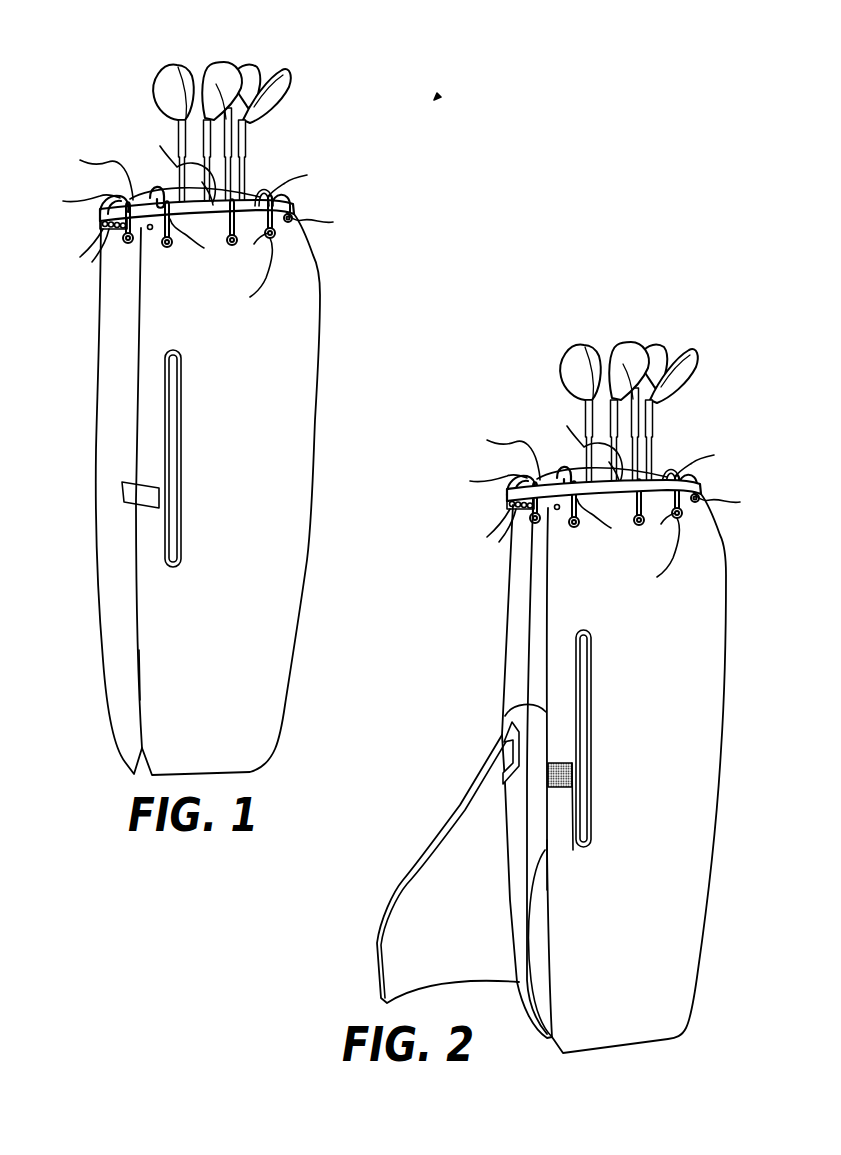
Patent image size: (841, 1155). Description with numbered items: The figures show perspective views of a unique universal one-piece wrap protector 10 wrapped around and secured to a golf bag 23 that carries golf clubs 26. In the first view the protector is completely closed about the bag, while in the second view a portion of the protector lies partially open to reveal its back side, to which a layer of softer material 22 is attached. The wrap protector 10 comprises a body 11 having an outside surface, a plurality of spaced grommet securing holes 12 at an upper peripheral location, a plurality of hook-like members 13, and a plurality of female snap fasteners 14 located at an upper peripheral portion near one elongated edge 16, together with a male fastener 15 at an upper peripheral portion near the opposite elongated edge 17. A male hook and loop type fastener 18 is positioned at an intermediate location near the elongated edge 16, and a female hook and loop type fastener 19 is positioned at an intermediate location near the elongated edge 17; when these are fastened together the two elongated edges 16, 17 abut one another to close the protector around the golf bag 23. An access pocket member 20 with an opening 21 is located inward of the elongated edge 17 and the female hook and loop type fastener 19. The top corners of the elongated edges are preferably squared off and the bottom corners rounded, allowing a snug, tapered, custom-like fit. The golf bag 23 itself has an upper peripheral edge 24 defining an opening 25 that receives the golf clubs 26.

In FIG. 1, the one-piece wrap protector 10 is at (439, 96).
In FIG. 1, the body 11 is at (297, 379).
In FIG. 2, the body 11 is at (706, 660).
In FIG. 1, the grommet securing holes 12 is at (100, 226).
In FIG. 2, the grommet securing holes 12 is at (572, 533).
In FIG. 1, the hook-like members 13 is at (198, 212).
In FIG. 2, the hook-like members 13 is at (605, 492).
In FIG. 1, the female snap fasteners 14 is at (105, 227).
In FIG. 2, the female snap fasteners 14 is at (507, 551).
In FIG. 1, the male fastener 15 is at (150, 230).
In FIG. 2, the male fastener 15 is at (564, 542).
In FIG. 1, the elongated edge 16 is at (137, 592).
In FIG. 2, the elongated edge 16 is at (502, 712).
In FIG. 1, the elongated edge 17 is at (139, 672).
In FIG. 2, the elongated edge 17 is at (549, 860).
In FIG. 1, the male hook and loop type fastener 18 is at (120, 489).
In FIG. 2, the male hook and loop type fastener 18 is at (501, 751).
In FIG. 2, the female hook and loop type fastener 19 is at (566, 763).
In FIG. 1, the access pocket member 20 is at (181, 494).
In FIG. 2, the access pocket member 20 is at (590, 775).
In FIG. 1, the opening 21 is at (174, 438).
In FIG. 2, the opening 21 is at (585, 718).
In FIG. 2, the layer of softer material 22 is at (417, 922).
In FIG. 2, the golf bag 23 is at (536, 832).
In FIG. 1, the upper peripheral edge 24 is at (261, 189).
In FIG. 2, the upper peripheral edge 24 is at (677, 456).
In FIG. 1, the opening 25 is at (163, 193).
In FIG. 2, the opening 25 is at (546, 442).
In FIG. 1, the golf clubs 26 is at (264, 70).
In FIG. 2, the golf clubs 26 is at (629, 385).